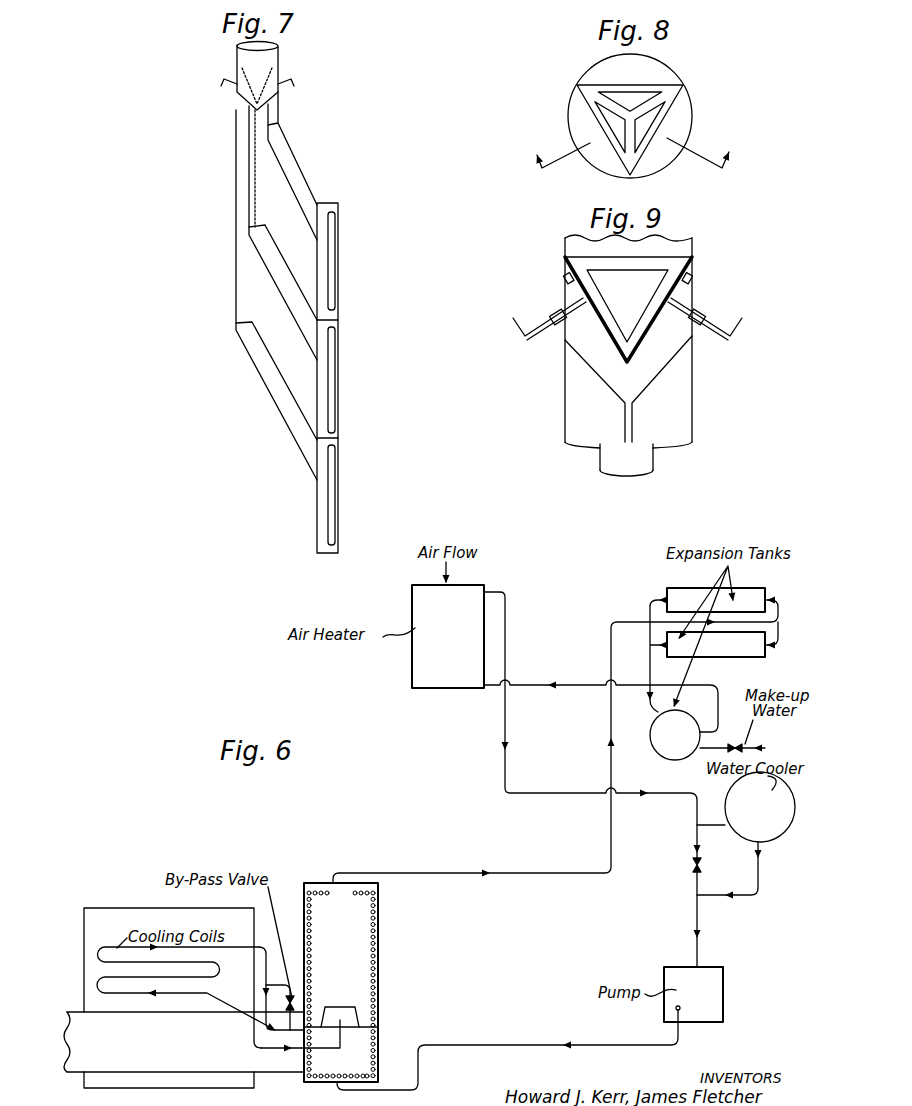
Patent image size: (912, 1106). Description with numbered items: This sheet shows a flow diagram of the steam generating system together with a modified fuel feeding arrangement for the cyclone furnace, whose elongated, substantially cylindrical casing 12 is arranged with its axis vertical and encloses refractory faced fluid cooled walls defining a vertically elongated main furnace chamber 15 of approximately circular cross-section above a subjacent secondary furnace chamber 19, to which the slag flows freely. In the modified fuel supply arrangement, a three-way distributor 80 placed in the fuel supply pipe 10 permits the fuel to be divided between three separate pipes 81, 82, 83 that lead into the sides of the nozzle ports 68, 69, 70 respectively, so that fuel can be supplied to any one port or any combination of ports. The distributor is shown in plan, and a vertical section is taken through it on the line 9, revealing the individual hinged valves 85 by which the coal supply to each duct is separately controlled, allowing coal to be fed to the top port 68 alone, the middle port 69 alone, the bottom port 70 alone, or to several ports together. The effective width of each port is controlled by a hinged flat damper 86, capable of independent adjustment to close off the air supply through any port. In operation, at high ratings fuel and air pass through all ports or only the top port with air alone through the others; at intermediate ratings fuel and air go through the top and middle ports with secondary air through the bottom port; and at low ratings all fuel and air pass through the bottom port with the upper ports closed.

In FIG. 8, the section line 9— 9 is at (637, 141).
In FIG. 7, the fuel supply pipe 10 is at (280, 63).
In FIG. 6, the casing 12 is at (382, 973).
In FIG. 6, the main furnace chamber 15 is at (349, 960).
In FIG. 6, the secondary furnace chamber 19 is at (350, 1071).
In FIG. 7, the top nozzle port 68 is at (333, 268).
In FIG. 7, the middle nozzle port 69 is at (323, 395).
In FIG. 7, the bottom nozzle port 70 is at (322, 497).
In FIG. 7, the three-way distributor 80 is at (239, 96).
In FIG. 9, the three-way distributor 80 is at (690, 262).
In FIG. 7, the fuel pipe 81 is at (295, 172).
In FIG. 7, the fuel pipe 82 is at (275, 258).
In FIG. 7, the fuel pipe 83 is at (272, 370).
In FIG. 9, the hinged valve 85 is at (657, 333).
In FIG. 7, the hinged flat damper 86 is at (361, 378).